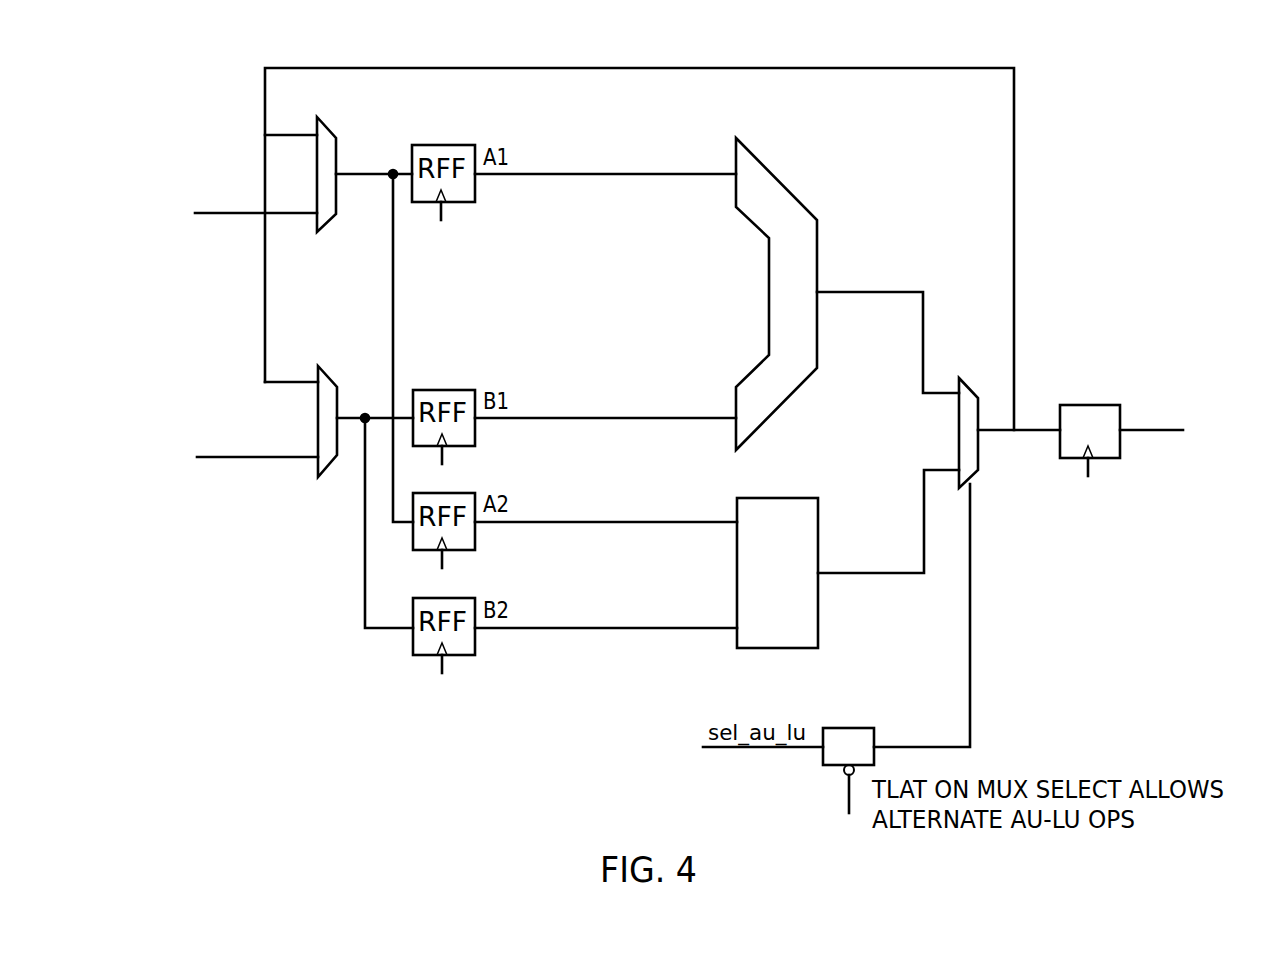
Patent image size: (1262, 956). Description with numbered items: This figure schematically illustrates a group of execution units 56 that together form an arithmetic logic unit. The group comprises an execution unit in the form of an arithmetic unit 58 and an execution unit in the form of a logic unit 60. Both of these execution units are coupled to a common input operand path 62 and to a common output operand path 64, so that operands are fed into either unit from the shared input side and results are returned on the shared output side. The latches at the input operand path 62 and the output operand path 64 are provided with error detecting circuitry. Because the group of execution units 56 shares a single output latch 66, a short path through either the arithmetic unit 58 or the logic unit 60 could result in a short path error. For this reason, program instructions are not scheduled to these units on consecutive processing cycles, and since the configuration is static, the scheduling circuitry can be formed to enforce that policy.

The group of execution units 56 is at (1070, 46).
The arithmetic unit 58 is at (818, 258).
The logic unit 60 is at (818, 530).
The common input operand path 62 is at (183, 172).
The common output operand path 64 is at (1190, 395).
The output latch 66 is at (1092, 403).